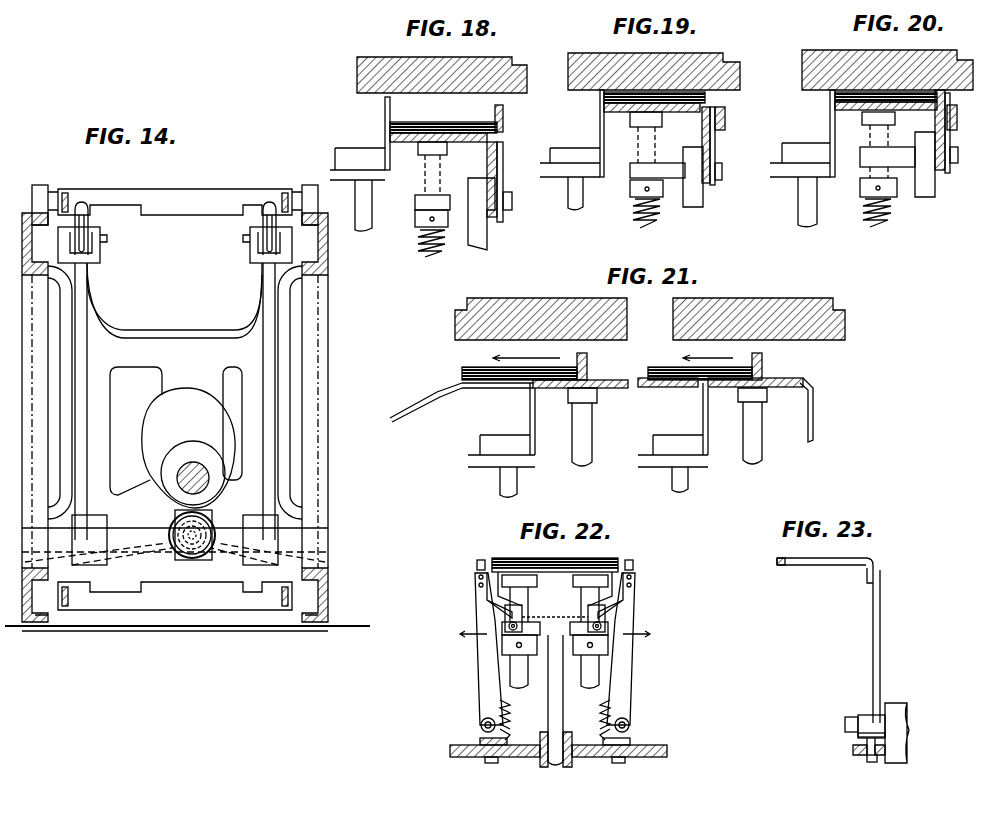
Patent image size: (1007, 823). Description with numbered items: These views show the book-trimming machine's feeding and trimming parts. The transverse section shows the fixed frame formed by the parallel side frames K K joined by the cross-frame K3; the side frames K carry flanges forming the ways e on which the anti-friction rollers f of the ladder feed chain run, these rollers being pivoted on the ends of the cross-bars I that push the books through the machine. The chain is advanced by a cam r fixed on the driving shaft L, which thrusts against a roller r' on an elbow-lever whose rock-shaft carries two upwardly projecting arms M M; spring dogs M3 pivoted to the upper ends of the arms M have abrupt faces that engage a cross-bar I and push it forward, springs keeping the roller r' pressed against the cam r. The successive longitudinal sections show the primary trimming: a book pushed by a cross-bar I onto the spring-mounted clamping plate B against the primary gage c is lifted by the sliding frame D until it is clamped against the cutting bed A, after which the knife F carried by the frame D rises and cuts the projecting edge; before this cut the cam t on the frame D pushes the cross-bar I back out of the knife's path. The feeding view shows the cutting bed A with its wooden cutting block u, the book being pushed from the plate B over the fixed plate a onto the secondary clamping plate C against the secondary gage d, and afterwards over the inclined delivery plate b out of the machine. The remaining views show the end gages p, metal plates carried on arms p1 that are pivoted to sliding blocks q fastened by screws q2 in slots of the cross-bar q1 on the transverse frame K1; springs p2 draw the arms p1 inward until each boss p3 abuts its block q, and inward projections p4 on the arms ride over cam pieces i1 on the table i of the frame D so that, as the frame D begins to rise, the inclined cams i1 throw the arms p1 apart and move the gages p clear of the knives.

In FIG. 14, the side frame K is at (25, 385).
In FIG. 14, the anti-friction roller f is at (40, 186).
In FIG. 14, the cross-bar I is at (175, 399).
In FIG. 18, the cross-bar I is at (503, 117).
In FIG. 19, the cross-bar I is at (725, 120).
In FIG. 20, the cross-bar I is at (956, 117).
In FIG. 21, the cross-bar I is at (673, 366).
In FIG. 14, the way e is at (43, 612).
In FIG. 14, the spring dog M3 is at (88, 217).
In FIG. 14, the arm M is at (87, 352).
In FIG. 14, the cross-frame K3 is at (174, 300).
In FIG. 14, the cam r is at (176, 437).
In FIG. 14, the driving shaft L is at (186, 468).
In FIG. 14, the roller r' is at (203, 528).
In FIG. 18, the cutting bed A is at (431, 69).
In FIG. 19, the cutting bed A is at (645, 65).
In FIG. 20, the cutting bed A is at (880, 63).
In FIG. 21, the cutting bed A is at (523, 305).
In FIG. 18, the primary gage c is at (365, 164).
In FIG. 19, the primary gage c is at (600, 121).
In FIG. 20, the primary gage c is at (830, 120).
In FIG. 21, the primary gage c is at (703, 412).
In FIG. 18, the clamping plate B is at (409, 143).
In FIG. 19, the clamping plate B is at (619, 115).
In FIG. 20, the clamping plate B is at (851, 112).
In FIG. 21, the clamping plate B is at (727, 389).
In FIG. 18, the cam t is at (503, 151).
In FIG. 19, the cam t is at (713, 107).
In FIG. 20, the cam t is at (950, 141).
In FIG. 18, the knife F is at (498, 169).
In FIG. 19, the knife F is at (712, 148).
In FIG. 20, the knife F is at (948, 135).
In FIG. 21, the knife F is at (812, 400).
In FIG. 18, the frame D is at (490, 226).
In FIG. 19, the frame D is at (693, 177).
In FIG. 20, the frame D is at (925, 195).
In FIG. 22, the frame D is at (555, 671).
In FIG. 21, the cutting block u is at (857, 320).
In FIG. 21, the delivery plate b is at (432, 392).
In FIG. 21, the secondary gage d is at (530, 414).
In FIG. 21, the clamping plate C is at (612, 380).
In FIG. 22, the clamping plate C is at (555, 575).
In FIG. 21, the fixed plate a is at (654, 388).
In FIG. 22, the end gage p is at (476, 566).
In FIG. 23, the end gage p is at (816, 564).
In FIG. 22, the inward projection p4 is at (647, 608).
In FIG. 22, the arm p1 is at (644, 664).
In FIG. 23, the arm p1 is at (880, 640).
In FIG. 22, the spring p2 is at (514, 715).
In FIG. 22, the boss p3 is at (512, 737).
In FIG. 23, the boss p3 is at (888, 737).
In FIG. 22, the sliding block q is at (480, 741).
In FIG. 23, the sliding block q is at (858, 737).
In FIG. 22, the cross-bar q1 is at (577, 758).
In FIG. 23, the cross-bar q1 is at (853, 748).
In FIG. 22, the fastening screw q2 is at (490, 763).
In FIG. 23, the fastening screw q2 is at (872, 762).
In FIG. 22, the table i is at (555, 622).
In FIG. 22, the cam piece i1 is at (525, 612).
In FIG. 23, the transverse frame K1 is at (905, 716).